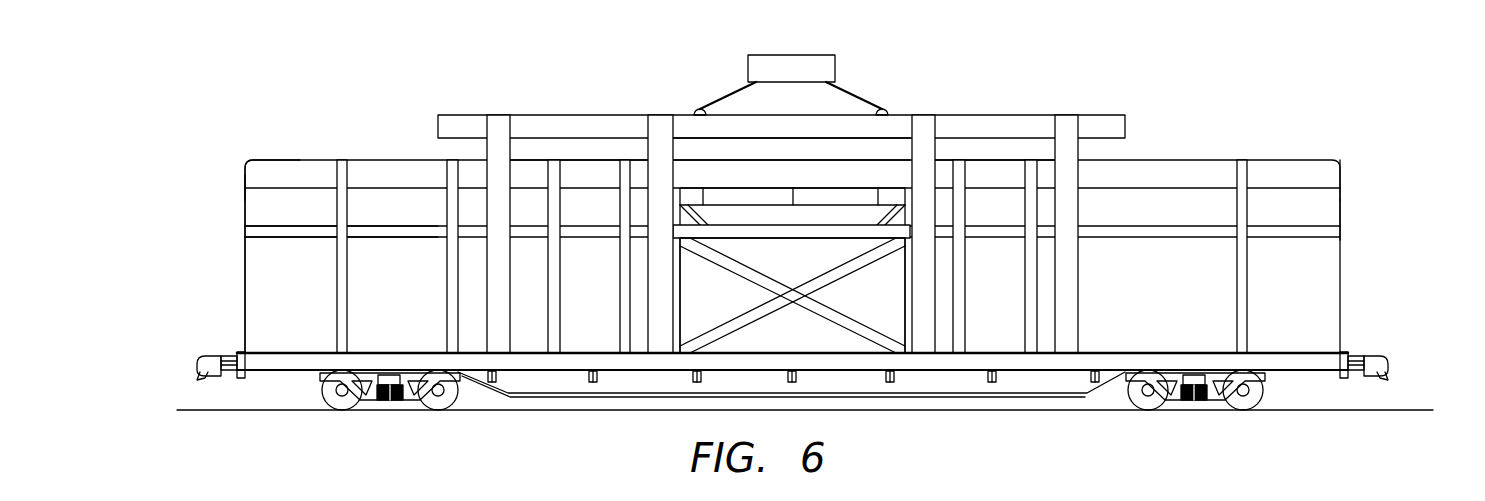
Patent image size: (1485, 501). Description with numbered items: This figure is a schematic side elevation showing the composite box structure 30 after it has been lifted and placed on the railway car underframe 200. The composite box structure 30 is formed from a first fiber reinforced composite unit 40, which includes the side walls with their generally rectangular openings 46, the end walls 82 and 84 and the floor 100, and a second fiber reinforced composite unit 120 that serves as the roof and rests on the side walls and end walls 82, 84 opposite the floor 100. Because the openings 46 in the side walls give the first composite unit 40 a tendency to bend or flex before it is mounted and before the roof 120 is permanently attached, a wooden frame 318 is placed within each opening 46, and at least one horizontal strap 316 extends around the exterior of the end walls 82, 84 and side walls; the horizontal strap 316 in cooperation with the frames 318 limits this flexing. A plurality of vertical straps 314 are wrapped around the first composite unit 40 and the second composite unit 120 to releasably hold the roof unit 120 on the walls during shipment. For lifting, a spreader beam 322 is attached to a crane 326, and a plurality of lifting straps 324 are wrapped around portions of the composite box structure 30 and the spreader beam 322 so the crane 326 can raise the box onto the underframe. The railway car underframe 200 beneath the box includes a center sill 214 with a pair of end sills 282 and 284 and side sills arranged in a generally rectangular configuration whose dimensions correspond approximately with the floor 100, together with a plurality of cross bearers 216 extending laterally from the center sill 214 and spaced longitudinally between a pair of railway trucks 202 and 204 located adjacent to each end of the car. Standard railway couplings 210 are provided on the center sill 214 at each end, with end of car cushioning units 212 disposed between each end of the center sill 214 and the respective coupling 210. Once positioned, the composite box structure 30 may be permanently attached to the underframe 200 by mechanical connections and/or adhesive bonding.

The composite box structure 30 is at (206, 242).
The first fiber reinforced composite unit 40 is at (1346, 218).
The opening 46 is at (698, 292).
The end wall 82 is at (1342, 258).
The end wall 84 is at (245, 282).
The floor 100 is at (800, 343).
The second fiber reinforced composite unit 120 is at (1346, 168).
The railway car underframe 200 is at (305, 392).
The railway truck 202 is at (1196, 408).
The railway truck 204 is at (390, 408).
The railway coupling 210 is at (194, 362).
The end of car cushioning unit 212 is at (222, 354).
The center sill 214 is at (945, 394).
The cross bearer 216 is at (692, 382).
The end sill 282 is at (1332, 375).
The end sill 284 is at (250, 375).
The vertical strap 314 is at (343, 166).
The horizontal strap 316 is at (362, 228).
The wooden frame 318 is at (748, 190).
The spreader beam 322 is at (975, 120).
The lifting strap 324 is at (497, 126).
The crane 326 is at (778, 55).